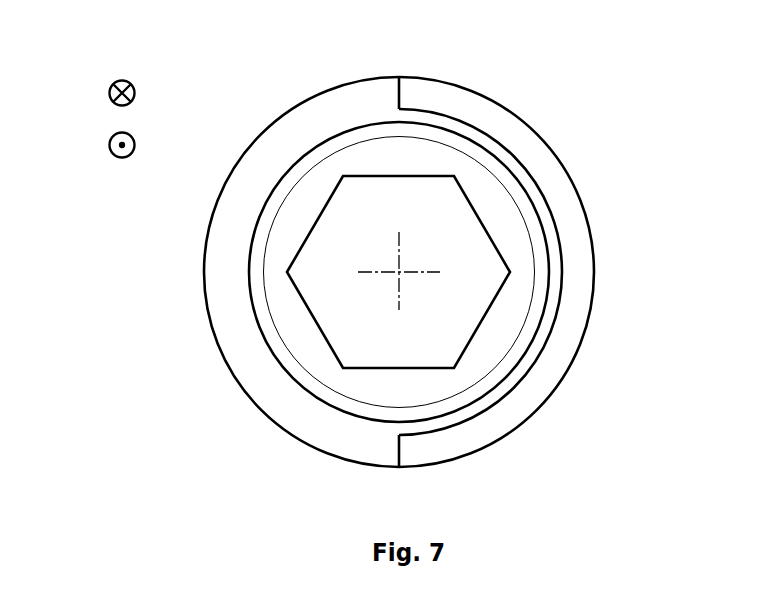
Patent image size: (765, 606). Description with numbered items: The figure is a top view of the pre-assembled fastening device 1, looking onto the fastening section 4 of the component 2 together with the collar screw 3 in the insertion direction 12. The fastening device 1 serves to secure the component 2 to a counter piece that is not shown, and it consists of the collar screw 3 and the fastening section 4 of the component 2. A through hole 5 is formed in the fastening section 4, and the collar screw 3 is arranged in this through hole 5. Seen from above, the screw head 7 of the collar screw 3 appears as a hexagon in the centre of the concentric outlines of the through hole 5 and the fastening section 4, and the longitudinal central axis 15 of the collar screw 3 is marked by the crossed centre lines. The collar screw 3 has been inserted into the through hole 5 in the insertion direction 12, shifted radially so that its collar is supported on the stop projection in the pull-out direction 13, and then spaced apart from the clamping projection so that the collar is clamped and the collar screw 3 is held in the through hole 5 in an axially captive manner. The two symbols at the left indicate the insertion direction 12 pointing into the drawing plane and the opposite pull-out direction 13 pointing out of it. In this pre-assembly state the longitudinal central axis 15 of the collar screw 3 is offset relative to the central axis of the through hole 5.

The fastening device 1 is at (607, 155).
The component 2 is at (594, 270).
The collar screw 3 is at (251, 308).
The fastening section 4 is at (570, 325).
The through hole 5 is at (352, 250).
The screw head 7 is at (323, 316).
The insertion direction 12 is at (108, 93).
The pull-out direction 13 is at (108, 145).
The longitudinal central axis of the collar screw 15 is at (397, 275).